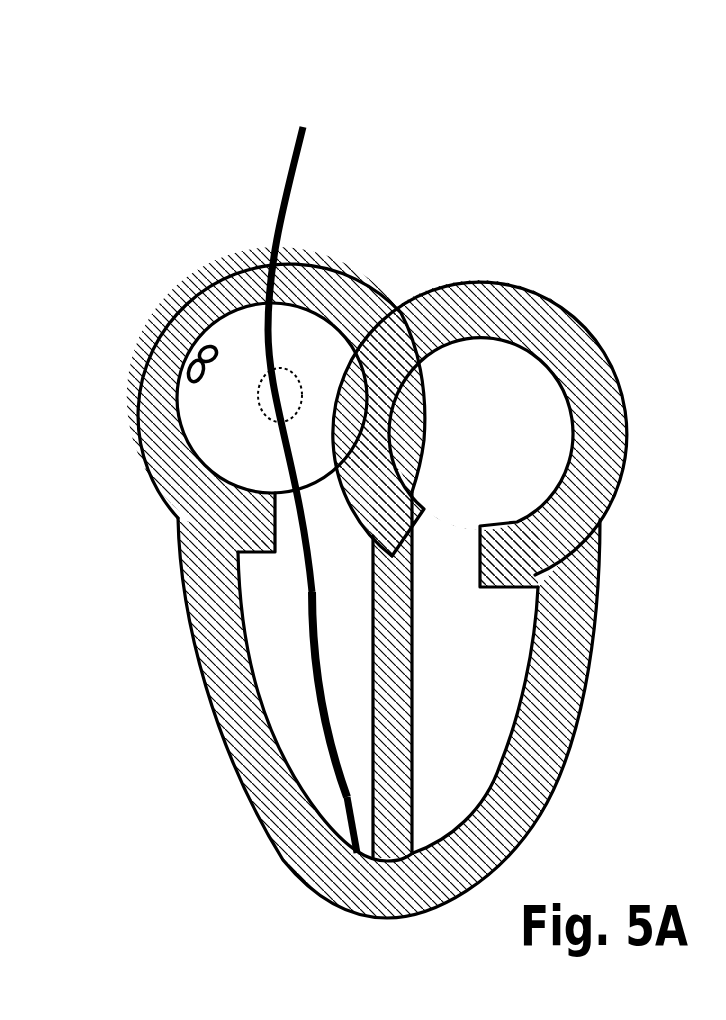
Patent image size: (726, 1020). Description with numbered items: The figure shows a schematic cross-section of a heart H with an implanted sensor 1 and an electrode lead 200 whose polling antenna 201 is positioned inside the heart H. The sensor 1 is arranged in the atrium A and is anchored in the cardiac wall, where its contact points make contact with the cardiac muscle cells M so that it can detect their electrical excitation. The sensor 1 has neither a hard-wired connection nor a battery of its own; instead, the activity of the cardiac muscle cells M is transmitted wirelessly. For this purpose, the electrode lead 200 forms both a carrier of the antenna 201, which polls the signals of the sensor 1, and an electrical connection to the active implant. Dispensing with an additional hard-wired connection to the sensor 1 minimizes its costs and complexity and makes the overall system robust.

The implantable sensor 1 is at (200, 333).
The electrode lead 200 is at (316, 572).
The antenna 201 is at (297, 390).
The heart H is at (455, 273).
The cardiac muscle cells M is at (222, 288).
The atrium A is at (243, 445).